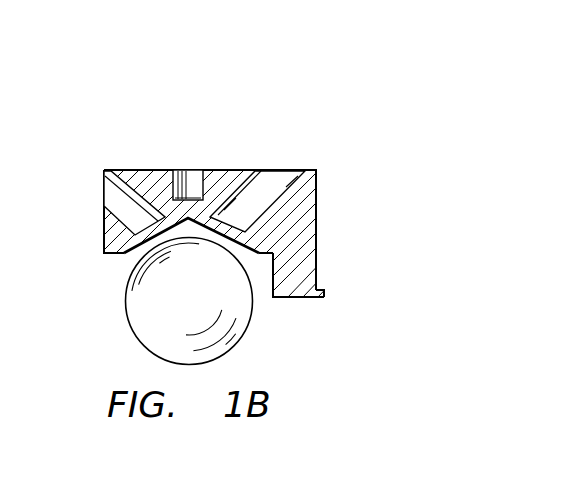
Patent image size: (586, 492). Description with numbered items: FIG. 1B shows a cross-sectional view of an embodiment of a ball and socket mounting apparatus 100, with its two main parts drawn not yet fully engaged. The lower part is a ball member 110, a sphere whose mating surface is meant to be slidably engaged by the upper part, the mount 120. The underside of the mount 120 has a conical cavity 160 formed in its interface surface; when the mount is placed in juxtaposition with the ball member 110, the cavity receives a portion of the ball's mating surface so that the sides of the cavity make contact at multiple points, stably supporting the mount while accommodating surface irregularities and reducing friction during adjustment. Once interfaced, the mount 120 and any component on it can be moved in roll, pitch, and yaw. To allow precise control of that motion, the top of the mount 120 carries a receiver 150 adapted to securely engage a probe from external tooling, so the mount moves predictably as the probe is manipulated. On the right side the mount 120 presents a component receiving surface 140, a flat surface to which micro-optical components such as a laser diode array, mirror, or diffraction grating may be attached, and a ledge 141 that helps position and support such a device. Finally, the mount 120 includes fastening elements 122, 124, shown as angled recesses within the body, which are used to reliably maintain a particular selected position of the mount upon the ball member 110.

The mounting apparatus 100 is at (340, 68).
The ball member 110 is at (126, 301).
The mount 120 is at (226, 171).
The fastening element 122 is at (111, 185).
The fastening element 124 is at (278, 177).
The component receiving surface 140 is at (317, 228).
The ledge 141 is at (323, 288).
The receiver 150 is at (189, 177).
The conical cavity 160 is at (186, 226).